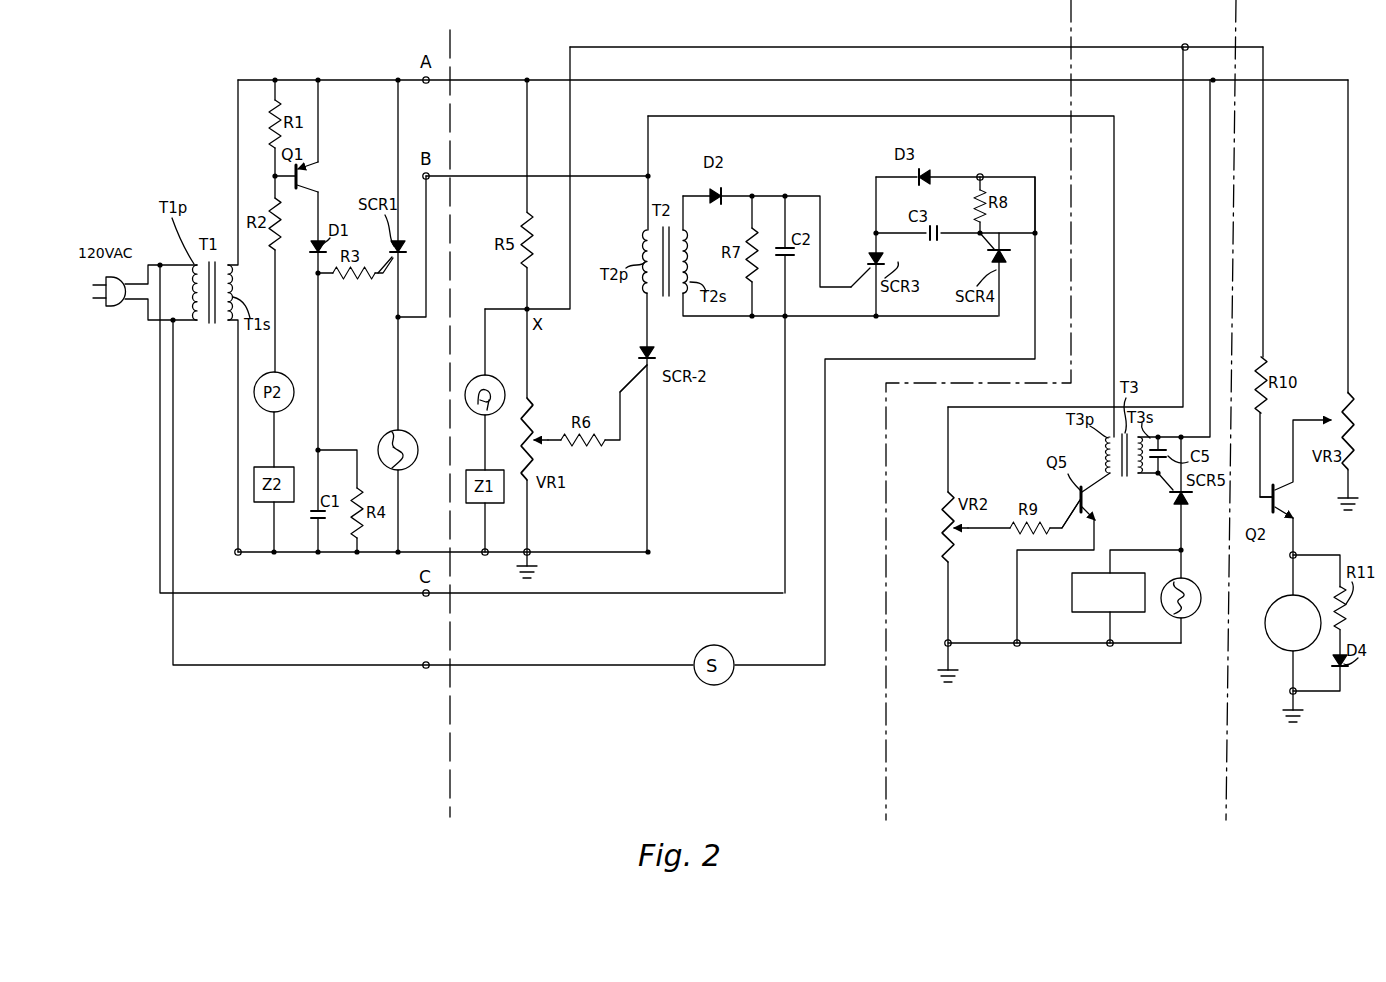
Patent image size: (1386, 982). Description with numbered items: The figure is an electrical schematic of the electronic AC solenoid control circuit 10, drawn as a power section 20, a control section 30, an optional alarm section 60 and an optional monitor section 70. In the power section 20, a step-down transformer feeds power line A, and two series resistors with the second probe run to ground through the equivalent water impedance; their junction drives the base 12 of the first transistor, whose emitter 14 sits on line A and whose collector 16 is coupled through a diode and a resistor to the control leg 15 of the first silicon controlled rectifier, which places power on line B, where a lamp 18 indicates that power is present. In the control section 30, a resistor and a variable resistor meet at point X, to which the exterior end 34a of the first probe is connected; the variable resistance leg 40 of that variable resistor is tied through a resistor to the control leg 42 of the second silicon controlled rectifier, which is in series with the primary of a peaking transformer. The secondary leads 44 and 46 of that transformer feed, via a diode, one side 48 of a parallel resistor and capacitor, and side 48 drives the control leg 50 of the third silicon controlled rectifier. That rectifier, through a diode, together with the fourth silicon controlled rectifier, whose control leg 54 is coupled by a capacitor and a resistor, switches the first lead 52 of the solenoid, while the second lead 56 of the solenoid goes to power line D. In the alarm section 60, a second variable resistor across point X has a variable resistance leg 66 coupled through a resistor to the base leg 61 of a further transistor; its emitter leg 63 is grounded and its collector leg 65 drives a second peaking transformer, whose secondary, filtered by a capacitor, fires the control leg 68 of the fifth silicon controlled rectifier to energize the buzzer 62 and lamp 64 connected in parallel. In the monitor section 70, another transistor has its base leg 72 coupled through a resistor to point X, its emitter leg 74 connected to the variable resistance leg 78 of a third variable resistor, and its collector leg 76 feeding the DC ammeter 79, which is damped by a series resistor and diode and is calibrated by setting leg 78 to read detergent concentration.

The electronic AC solenoid control circuit 10 is at (322, 38).
The base of transistor Q1 12 is at (293, 188).
The emitter of transistor Q1 14 is at (304, 170).
The control leg of SCR1 15 is at (386, 277).
The collector of transistor Q1 16 is at (312, 186).
The lamp 18 is at (404, 435).
The power section 20 is at (306, 668).
The control section 30 is at (541, 702).
The exterior end of probe P1 34a is at (488, 336).
The variable resistance leg of VR1 40 is at (548, 436).
The control leg of SCR2 42 is at (626, 386).
The lead of secondary winding T2s 44 is at (688, 192).
The lead of secondary winding T2s 46 is at (712, 317).
The side of parallel combination of R7 and C2 48 is at (780, 192).
The control leg of SCR3 50 is at (838, 288).
The first lead of solenoid S 52 is at (776, 665).
The control leg of SCR4 54 is at (980, 246).
The second lead of solenoid S 56 is at (652, 668).
The alarm section 60 is at (1025, 672).
The base leg of transistor Q5 61 is at (1080, 518).
The buzzer 62 is at (1071, 592).
The emitter leg of transistor Q5 63 is at (1088, 506).
The lamp 64 is at (1194, 580).
The collector leg of transistor Q5 65 is at (1094, 484).
The variable resistance leg of VR2 66 is at (966, 534).
The control leg of SCR5 68 is at (1160, 478).
The monitor section 70 is at (1262, 676).
The base leg of transistor Q2 72 is at (1262, 503).
The emitter leg of transistor Q2 74 is at (1286, 486).
The collector leg of transistor Q2 76 is at (1288, 510).
The variable resistance leg of VR3 78 is at (1320, 420).
The DC ammeter 79 is at (1272, 600).